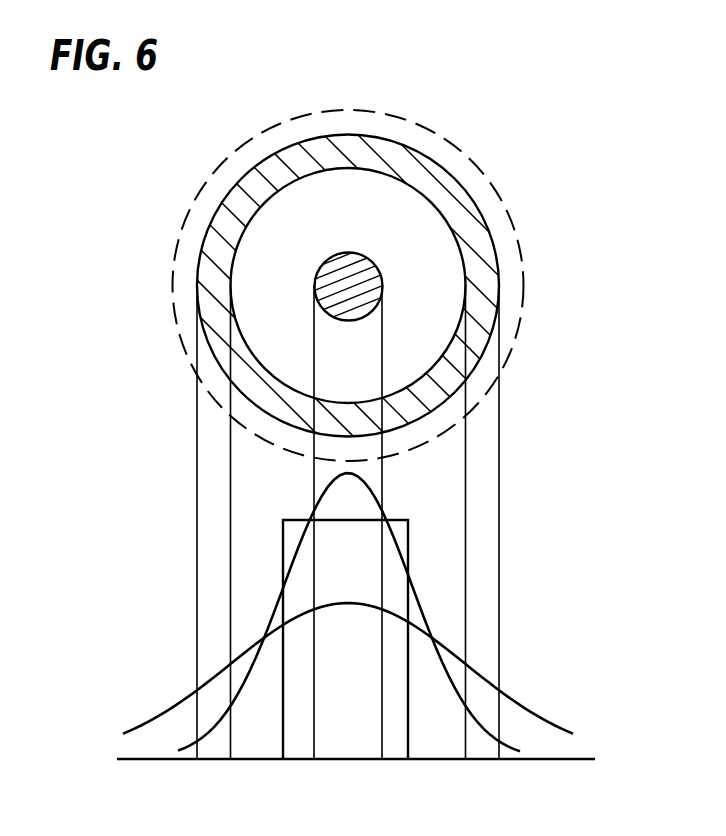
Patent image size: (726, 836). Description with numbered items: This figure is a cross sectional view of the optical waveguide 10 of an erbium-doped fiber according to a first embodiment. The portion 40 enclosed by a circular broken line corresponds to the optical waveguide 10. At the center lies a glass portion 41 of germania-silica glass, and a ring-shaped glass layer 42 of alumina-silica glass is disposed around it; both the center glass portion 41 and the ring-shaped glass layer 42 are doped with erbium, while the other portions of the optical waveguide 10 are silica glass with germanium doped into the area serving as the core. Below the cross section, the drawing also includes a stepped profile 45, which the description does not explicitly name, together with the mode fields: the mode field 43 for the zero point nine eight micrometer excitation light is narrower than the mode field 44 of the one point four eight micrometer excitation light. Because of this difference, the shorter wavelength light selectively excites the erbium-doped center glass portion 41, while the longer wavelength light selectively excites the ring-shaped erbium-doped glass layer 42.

The optical waveguide 10 is at (357, 65).
The portion enclosed by a circular broken line 40 is at (407, 118).
The glass portion 41 is at (383, 284).
The ring-shaped glass layer 42 is at (448, 183).
The mode field 43 is at (422, 618).
The mode field 44 is at (527, 712).
The refractive index profile 45 is at (410, 560).